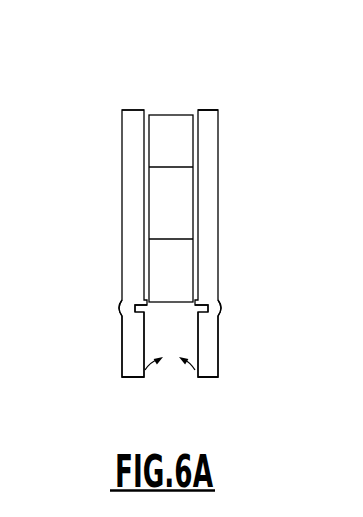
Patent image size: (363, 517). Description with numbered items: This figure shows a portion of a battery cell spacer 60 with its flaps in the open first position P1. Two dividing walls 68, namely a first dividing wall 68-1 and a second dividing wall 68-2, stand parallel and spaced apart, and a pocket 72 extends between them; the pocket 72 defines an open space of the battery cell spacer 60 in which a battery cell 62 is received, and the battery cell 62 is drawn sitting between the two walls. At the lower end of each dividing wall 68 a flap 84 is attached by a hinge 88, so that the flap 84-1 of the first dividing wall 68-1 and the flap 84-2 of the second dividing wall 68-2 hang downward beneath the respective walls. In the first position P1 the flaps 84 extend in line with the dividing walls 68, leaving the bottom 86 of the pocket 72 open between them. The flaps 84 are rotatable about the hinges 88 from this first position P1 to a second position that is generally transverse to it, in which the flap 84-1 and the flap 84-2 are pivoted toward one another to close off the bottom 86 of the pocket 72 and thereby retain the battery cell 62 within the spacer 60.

The battery cell spacer 60 is at (246, 66).
The battery cell 62 is at (170, 130).
The pocket 72 is at (193, 128).
The dividing walls 68 is at (106, 112).
The first dividing wall 68-1 is at (122, 198).
The second dividing wall 68-2 is at (218, 208).
The hinge 88 is at (120, 313).
The flap 84 is at (126, 387).
The flap of first dividing wall 84-1 is at (122, 346).
The flap of second dividing wall 84-2 is at (218, 346).
The bottom of the pocket 86 is at (166, 309).
The first position P1 is at (183, 430).